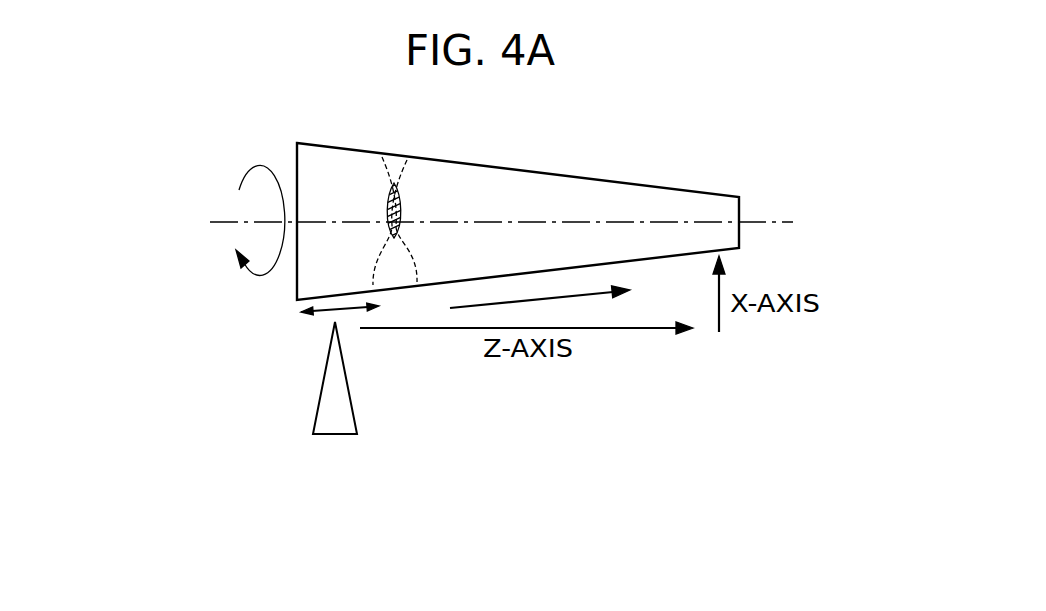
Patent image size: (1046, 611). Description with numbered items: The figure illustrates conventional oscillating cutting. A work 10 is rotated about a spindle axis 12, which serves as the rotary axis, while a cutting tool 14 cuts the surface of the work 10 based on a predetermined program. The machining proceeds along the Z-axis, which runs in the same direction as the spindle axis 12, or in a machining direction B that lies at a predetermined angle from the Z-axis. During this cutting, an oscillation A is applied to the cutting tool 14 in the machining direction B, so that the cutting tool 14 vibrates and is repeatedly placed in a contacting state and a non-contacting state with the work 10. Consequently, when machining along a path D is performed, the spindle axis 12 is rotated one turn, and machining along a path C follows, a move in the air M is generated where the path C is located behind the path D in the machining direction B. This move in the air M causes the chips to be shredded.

The work 10 is at (630, 182).
The spindle axis 12 is at (425, 220).
The cutting tool 14 is at (335, 434).
The path C is at (390, 195).
The move in the air M is at (398, 197).
The path D is at (402, 202).
The oscillation A is at (326, 316).
The machining direction B is at (573, 297).